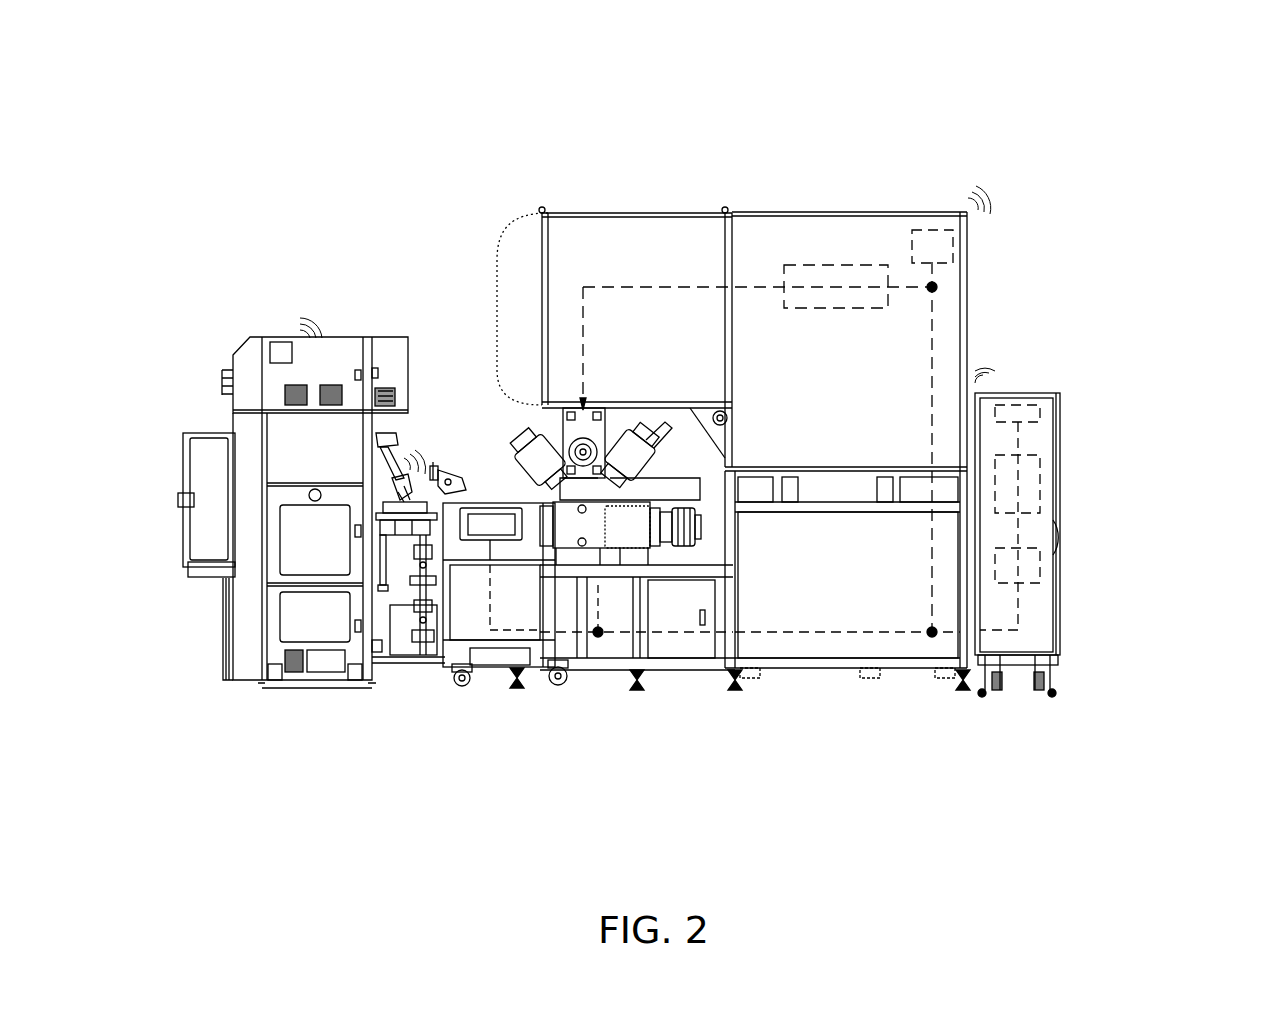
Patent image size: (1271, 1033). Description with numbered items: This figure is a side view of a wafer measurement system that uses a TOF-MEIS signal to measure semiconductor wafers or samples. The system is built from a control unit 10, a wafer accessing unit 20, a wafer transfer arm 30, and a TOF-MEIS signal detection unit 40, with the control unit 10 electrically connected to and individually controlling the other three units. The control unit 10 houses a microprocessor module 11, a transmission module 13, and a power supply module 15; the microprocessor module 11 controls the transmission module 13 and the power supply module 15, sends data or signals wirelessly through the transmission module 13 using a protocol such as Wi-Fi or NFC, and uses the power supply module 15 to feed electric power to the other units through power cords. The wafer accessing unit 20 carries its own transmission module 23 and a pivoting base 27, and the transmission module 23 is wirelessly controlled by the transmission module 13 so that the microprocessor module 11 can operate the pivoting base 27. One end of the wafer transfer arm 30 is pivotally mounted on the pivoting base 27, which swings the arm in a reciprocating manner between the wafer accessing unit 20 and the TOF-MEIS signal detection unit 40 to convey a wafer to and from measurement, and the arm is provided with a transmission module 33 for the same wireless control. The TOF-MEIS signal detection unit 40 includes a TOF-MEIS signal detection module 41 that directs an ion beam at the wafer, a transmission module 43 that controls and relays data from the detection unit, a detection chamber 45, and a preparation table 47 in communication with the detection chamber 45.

The control unit 10 is at (1080, 443).
The microprocessor module 11 is at (1040, 483).
The transmission module 13 is at (1020, 400).
The power supply module 15 is at (1040, 565).
The wafer accessing unit 20 is at (231, 333).
The transmission module 23 is at (280, 338).
The pivoting base 27 is at (404, 545).
The wafer transfer arm 30 is at (407, 440).
The transmission module 33 is at (428, 480).
The TOF-MEIS signal detection unit 40 is at (812, 166).
The TOF-MEIS signal detection module 41 is at (853, 268).
The transmission module 43 is at (932, 215).
The detection chamber 45 is at (680, 552).
The preparation table 47 is at (490, 692).